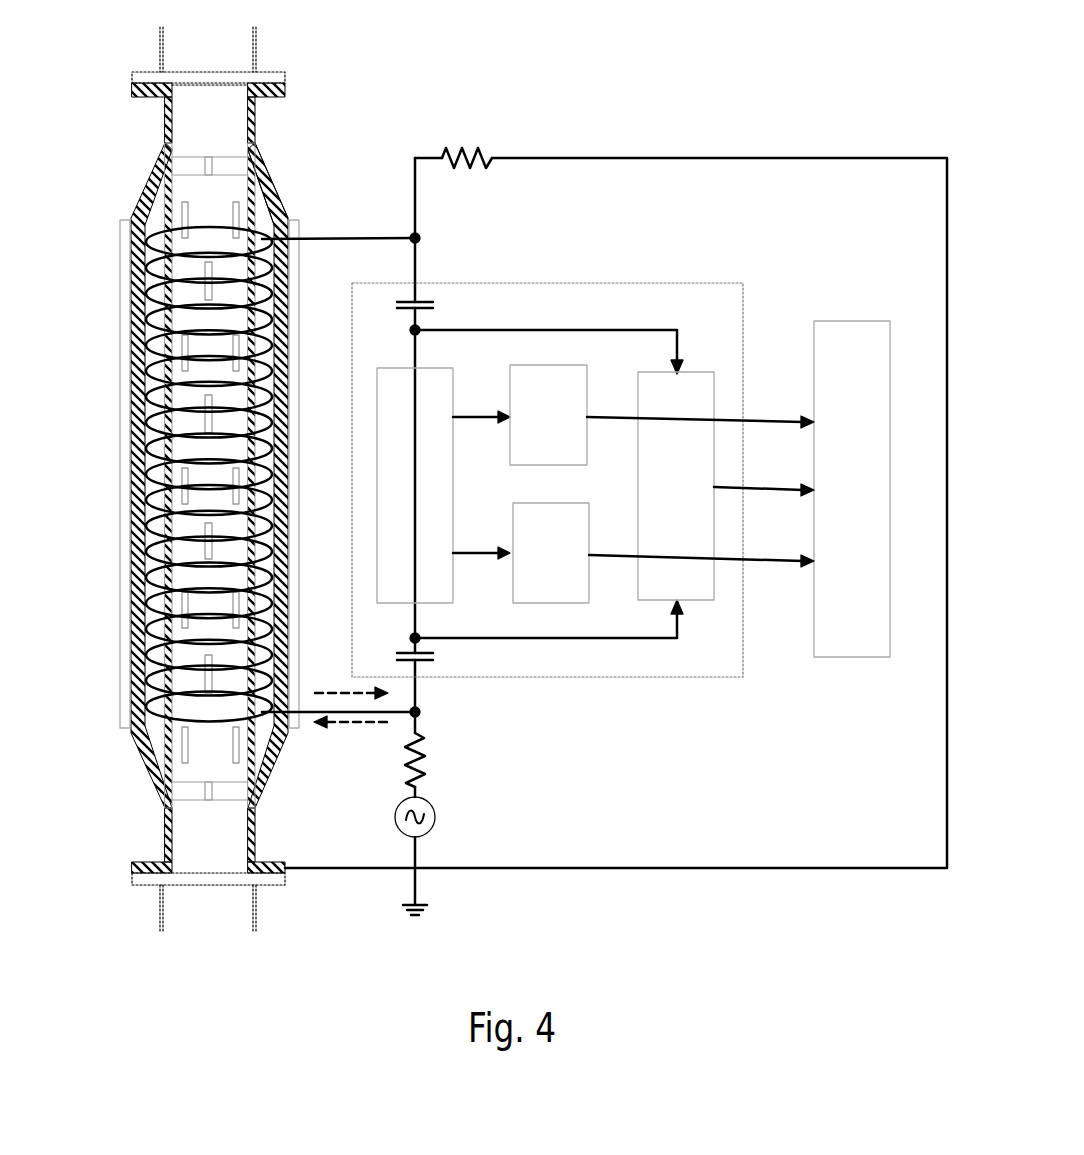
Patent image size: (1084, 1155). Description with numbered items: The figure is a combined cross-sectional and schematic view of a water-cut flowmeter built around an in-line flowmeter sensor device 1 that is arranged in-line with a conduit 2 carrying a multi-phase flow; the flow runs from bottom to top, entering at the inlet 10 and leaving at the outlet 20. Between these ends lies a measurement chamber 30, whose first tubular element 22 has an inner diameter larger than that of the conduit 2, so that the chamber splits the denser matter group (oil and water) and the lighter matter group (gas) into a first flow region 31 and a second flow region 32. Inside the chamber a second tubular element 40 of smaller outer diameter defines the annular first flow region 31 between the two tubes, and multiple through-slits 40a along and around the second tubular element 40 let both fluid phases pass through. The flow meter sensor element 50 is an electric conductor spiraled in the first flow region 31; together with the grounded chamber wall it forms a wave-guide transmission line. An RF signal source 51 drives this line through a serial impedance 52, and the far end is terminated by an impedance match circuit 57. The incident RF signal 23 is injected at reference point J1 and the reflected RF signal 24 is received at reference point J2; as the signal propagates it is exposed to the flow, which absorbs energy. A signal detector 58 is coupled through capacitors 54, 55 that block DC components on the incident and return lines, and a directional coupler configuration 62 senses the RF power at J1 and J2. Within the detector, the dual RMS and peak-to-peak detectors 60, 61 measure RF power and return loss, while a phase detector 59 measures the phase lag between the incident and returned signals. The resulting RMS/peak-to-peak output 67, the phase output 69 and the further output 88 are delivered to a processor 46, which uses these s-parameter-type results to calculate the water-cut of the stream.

The in-line flowmeter sensor device 1 is at (145, 132).
The conduit 2 is at (208, 475).
The inlet 10 is at (195, 853).
The outlet 20 is at (230, 108).
The first tubular element 22 is at (140, 273).
The incident RF signal 23 is at (350, 735).
The reflected RF signal 24 is at (351, 680).
The measurement chamber 30 is at (175, 475).
The first flow region 31 is at (257, 200).
The second flow region 32 is at (222, 268).
The second tubular element 40 is at (162, 228).
The through-slits 40a is at (205, 415).
The processor 46 is at (852, 489).
The flow meter sensor element 50 is at (78, 512).
The RF signal source 51 is at (431, 817).
The serial impedance 52 is at (436, 760).
The capacitor 54 is at (540, 635).
The capacitor 55 is at (540, 331).
The impedance match circuit 57 is at (465, 150).
The signal detector 58 is at (740, 283).
The phase detector 59 is at (676, 486).
The RMS detector 60 is at (548, 415).
The peak-to-peak detector 61 is at (551, 553).
The directional coupler configuration 62 is at (443, 485).
The RMS/Peak-to-Peak output 67 is at (701, 546).
The phase output 69 is at (764, 474).
The output signal 88 is at (700, 408).
The reference point J1 is at (438, 711).
The reference point J2 is at (438, 237).